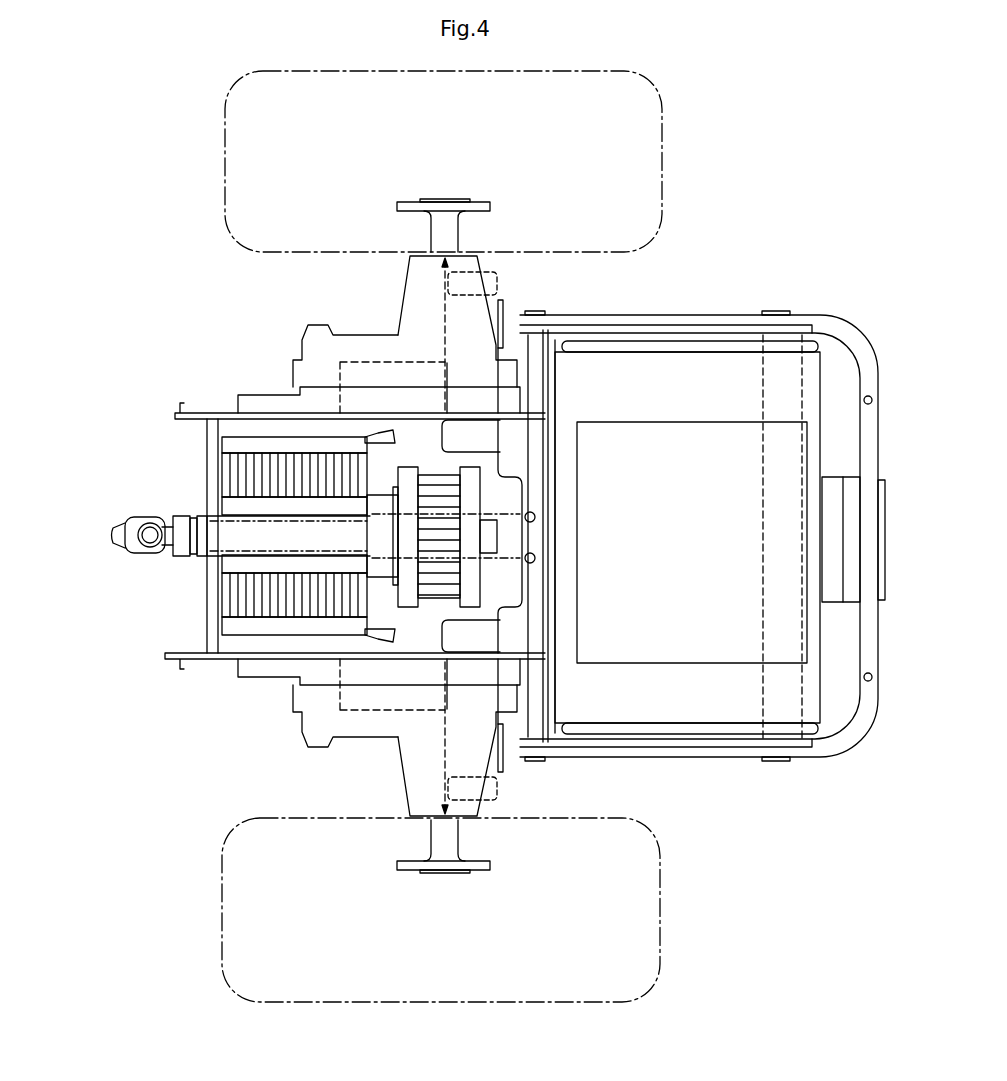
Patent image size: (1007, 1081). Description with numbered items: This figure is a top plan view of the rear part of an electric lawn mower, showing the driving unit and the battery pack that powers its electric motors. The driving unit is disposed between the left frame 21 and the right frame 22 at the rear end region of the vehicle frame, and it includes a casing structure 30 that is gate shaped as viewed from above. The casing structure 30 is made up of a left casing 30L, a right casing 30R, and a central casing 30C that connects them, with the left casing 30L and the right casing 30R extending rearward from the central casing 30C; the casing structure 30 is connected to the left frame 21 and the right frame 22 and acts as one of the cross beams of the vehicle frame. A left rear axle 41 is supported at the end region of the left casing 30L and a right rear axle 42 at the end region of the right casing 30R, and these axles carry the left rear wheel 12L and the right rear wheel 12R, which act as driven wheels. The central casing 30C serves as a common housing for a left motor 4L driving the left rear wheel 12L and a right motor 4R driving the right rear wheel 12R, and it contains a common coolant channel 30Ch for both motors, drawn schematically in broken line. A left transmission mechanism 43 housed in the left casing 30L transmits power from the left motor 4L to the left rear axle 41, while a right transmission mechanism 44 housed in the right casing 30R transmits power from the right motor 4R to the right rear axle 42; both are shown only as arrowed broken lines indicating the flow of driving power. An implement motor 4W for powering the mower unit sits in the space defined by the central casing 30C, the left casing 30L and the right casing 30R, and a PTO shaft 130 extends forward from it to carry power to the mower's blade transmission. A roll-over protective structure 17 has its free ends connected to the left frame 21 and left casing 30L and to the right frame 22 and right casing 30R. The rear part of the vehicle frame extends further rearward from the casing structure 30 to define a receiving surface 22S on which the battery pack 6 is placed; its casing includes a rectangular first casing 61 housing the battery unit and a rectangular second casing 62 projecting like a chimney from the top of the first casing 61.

The left rear wheel 12L is at (662, 153).
The right rear wheel 12R is at (660, 905).
The right rear axle 42 is at (430, 228).
The left rear axle 41 is at (432, 845).
The roll-over protective structure (ROPS) 17 is at (480, 290).
The right transmission mechanism 44 is at (365, 360).
The left transmission mechanism 43 is at (364, 712).
The right casing 30R is at (300, 338).
The left casing 30L is at (300, 725).
The casing structure 30 is at (248, 683).
The right frame 22 is at (200, 410).
The left frame 21 is at (182, 660).
The right motor 4R is at (236, 477).
The left motor 4L is at (227, 602).
The central casing 30C is at (232, 525).
The coolant channel 30Ch is at (243, 548).
The PTO shaft 130 is at (121, 549).
The implement motor 4W is at (470, 497).
The battery pack 6 is at (722, 330).
The receiving surface 22S is at (780, 352).
The first casing 61 is at (708, 713).
The second casing 62 is at (680, 430).